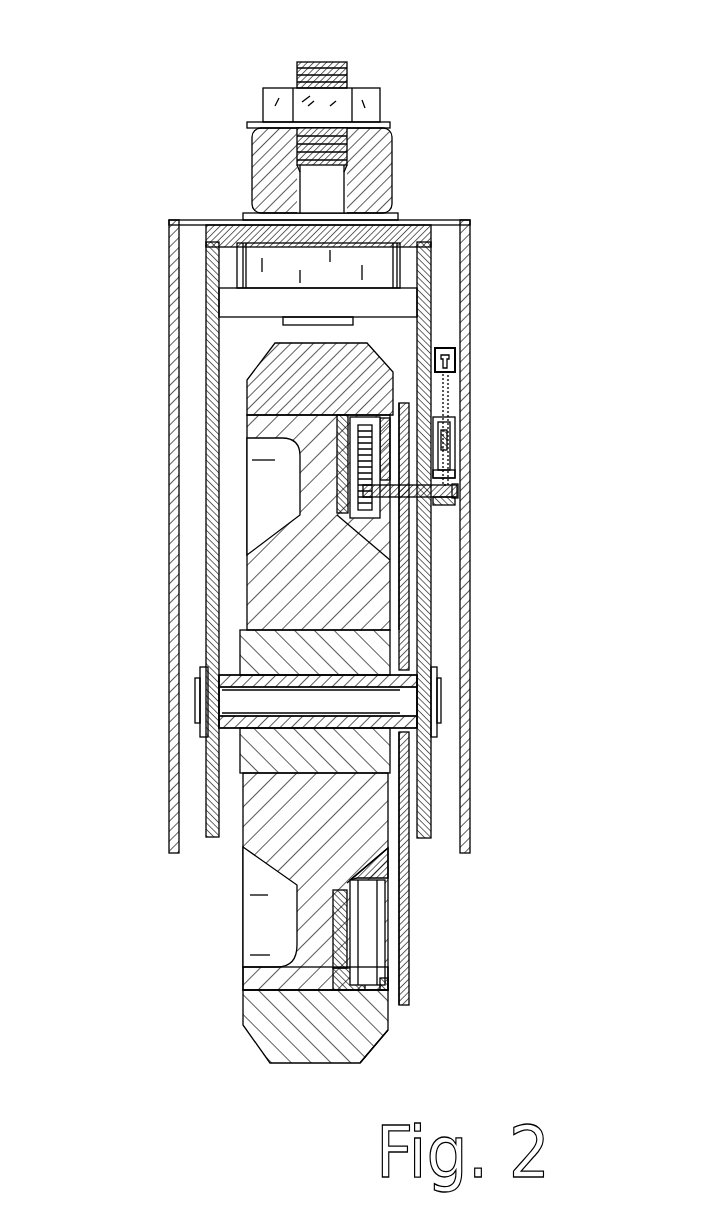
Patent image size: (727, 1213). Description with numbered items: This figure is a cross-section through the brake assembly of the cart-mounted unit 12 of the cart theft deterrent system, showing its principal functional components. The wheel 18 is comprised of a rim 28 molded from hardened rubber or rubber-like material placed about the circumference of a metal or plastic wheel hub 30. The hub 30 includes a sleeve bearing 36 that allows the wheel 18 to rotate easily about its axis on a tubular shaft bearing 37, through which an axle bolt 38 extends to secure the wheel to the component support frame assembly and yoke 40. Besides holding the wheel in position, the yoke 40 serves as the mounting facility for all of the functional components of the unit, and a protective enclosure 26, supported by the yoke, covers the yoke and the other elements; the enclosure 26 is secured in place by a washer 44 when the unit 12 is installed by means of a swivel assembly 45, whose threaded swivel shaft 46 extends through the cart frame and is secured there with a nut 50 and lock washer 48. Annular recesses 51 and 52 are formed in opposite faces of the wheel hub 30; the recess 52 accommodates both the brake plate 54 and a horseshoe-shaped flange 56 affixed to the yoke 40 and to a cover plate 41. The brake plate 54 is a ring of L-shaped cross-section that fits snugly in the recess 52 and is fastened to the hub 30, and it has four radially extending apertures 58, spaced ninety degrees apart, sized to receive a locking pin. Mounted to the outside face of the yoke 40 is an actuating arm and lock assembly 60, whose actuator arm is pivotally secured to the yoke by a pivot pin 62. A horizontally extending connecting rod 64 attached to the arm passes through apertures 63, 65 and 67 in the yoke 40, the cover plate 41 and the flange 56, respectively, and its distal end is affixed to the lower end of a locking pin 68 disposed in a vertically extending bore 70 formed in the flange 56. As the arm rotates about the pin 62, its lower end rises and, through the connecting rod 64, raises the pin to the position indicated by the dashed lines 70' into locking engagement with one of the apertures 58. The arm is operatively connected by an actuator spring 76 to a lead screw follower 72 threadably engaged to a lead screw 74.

The unit 12 is at (165, 457).
The wheel 18 is at (255, 1050).
The protective enclosure 26 is at (169, 232).
The rim 28 is at (372, 1045).
The wheel hub 30 is at (245, 972).
The sleeve bearing 36 is at (392, 754).
The tubular shaft bearing 37 is at (437, 683).
The axle bolt 38 is at (407, 705).
The yoke 40 is at (206, 298).
The cover plate 41 is at (405, 1006).
The washer 44 is at (243, 215).
The swivel assembly 45 is at (402, 268).
The threaded swivel shaft 46 is at (342, 62).
The lock washer 48 is at (392, 130).
The nut 50 is at (263, 103).
The annular recess 51 is at (263, 908).
The annular recess 52 is at (370, 927).
The brake plate 54 is at (388, 982).
The horseshoe-shaped flange 56 is at (340, 475).
The apertures 58 is at (370, 428).
The actuating arm and lock assembly 60 is at (458, 420).
The pivot pin 62 is at (452, 452).
The aperture 63 is at (455, 497).
The connecting rod 64 is at (458, 500).
The aperture 65 is at (457, 478).
The aperture 67 is at (457, 488).
The locking pin 68 is at (410, 530).
The bore 70 is at (394, 509).
The raised pin position 70' is at (273, 496).
The lead screw follower 72 is at (450, 348).
The lead screw 74 is at (449, 360).
The actuator spring 76 is at (449, 390).